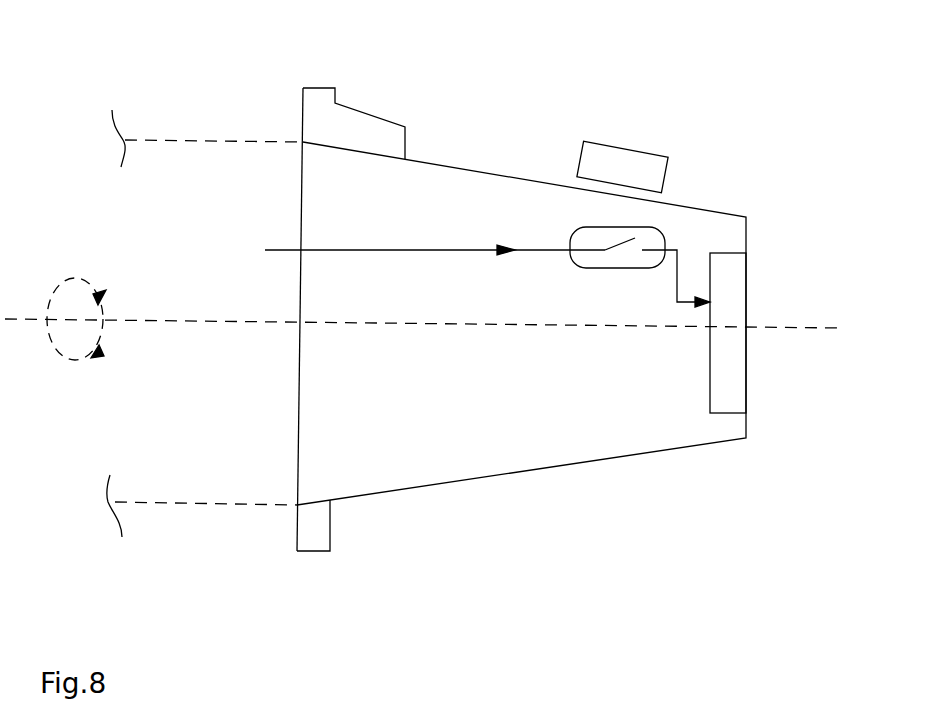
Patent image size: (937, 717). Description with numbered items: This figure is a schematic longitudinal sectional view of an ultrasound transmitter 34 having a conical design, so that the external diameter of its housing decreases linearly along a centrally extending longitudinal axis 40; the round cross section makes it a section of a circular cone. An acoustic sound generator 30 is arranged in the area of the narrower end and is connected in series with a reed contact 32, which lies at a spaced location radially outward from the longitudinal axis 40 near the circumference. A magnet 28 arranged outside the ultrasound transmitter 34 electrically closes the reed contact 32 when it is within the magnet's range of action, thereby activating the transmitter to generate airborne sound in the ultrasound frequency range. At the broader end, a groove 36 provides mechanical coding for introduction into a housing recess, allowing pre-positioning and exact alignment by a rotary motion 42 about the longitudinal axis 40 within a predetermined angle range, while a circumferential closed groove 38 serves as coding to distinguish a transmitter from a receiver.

The magnet 28 is at (646, 143).
The acoustic sound generator 30 is at (738, 288).
The reed contact 32 is at (657, 243).
The ultrasound transmitter 34 is at (625, 458).
The groove 36 is at (335, 122).
The closed groove 38 is at (322, 526).
The longitudinal axis 40 is at (788, 332).
The rotary motion 42 is at (55, 343).